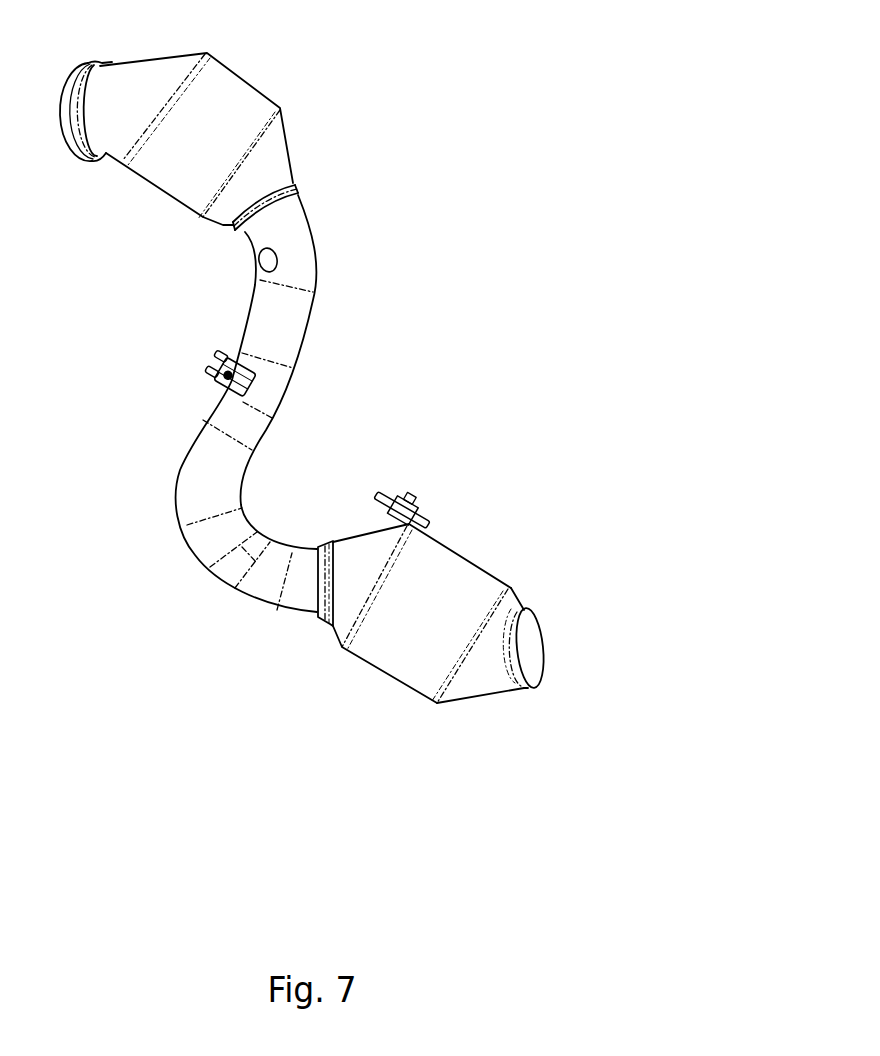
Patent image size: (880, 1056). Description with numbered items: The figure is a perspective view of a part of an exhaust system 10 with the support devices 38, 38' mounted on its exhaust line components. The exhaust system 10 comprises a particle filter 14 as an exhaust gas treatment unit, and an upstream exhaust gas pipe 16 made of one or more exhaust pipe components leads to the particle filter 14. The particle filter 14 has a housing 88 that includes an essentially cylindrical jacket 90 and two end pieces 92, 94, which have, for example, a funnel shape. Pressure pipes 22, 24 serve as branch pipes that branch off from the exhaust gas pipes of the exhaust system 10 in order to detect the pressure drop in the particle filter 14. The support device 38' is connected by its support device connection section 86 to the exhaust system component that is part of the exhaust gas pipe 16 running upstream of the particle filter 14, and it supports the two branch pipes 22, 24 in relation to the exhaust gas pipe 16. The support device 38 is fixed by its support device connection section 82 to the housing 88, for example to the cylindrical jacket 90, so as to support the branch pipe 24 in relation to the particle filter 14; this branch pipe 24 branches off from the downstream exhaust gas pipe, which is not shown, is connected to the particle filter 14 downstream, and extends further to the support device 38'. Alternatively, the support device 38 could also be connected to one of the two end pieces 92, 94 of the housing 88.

The exhaust system 10 is at (433, 118).
The particle filter 14 is at (473, 559).
The upstream exhaust gas pipe 16 is at (290, 392).
The pressure pipe 22 is at (216, 398).
The pressure pipe 24 is at (222, 352).
The support device 38 is at (465, 473).
The support device 38' is at (164, 393).
The support device connection section 82 is at (425, 542).
The support device connection section 86 is at (257, 377).
The housing 88 is at (391, 678).
The cylindrical jacket 90 is at (363, 637).
The end piece 92 is at (333, 541).
The end piece 94 is at (488, 697).